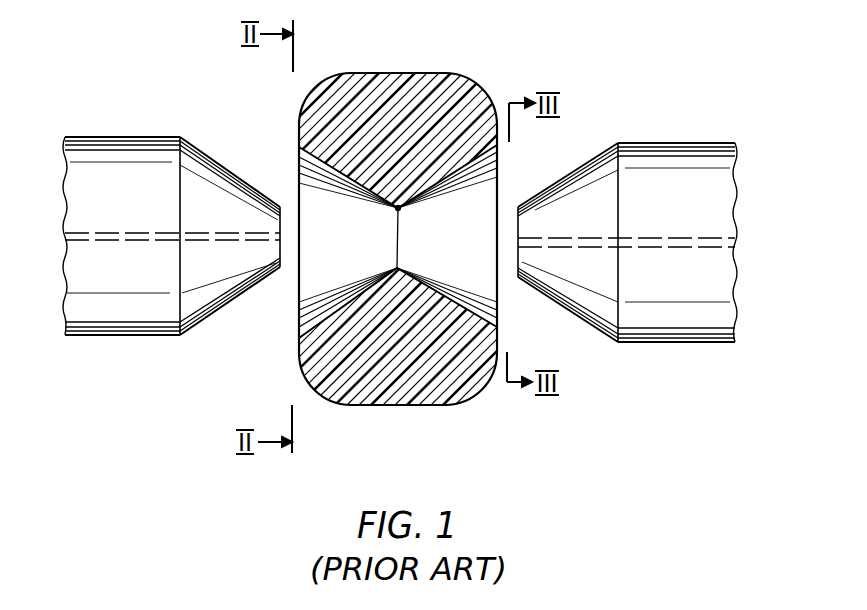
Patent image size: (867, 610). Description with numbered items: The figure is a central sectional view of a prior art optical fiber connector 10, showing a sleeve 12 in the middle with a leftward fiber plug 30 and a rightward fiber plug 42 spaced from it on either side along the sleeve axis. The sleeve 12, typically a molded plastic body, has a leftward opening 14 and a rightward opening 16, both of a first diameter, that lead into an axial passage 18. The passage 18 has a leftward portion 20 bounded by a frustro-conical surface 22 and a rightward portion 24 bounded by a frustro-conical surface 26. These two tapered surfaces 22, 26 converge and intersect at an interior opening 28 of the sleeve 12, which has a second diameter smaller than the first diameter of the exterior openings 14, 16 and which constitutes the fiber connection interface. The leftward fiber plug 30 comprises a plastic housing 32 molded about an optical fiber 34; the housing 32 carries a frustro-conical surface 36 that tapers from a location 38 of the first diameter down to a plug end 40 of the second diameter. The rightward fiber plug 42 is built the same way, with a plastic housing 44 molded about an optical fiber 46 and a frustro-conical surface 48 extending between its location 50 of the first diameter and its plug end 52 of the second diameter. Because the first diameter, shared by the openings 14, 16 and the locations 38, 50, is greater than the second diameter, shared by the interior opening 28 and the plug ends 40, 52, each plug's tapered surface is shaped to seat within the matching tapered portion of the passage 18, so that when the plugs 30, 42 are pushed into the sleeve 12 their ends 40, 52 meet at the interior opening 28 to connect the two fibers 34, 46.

The optical fiber connector 10 is at (642, 64).
The sleeve 12 is at (418, 85).
The leftward opening 14 is at (300, 147).
The rightward opening 16 is at (497, 150).
The axial passage 18 is at (290, 301).
The leftward portion 20 is at (368, 255).
The frustro-conical surface 22 is at (323, 158).
The rightward portion 24 is at (466, 255).
The frustro-conical surface 26 is at (490, 320).
The interior opening 28 is at (401, 209).
The leftward fiber plug 30 is at (128, 124).
The plastic housing 32 is at (118, 322).
The optical fiber 34 is at (187, 244).
The frustro-conical surface 36 is at (212, 140).
The location 38 is at (180, 204).
The plug end 40 is at (278, 213).
The rightward fiber plug 42 is at (678, 128).
The plastic housing 44 is at (700, 330).
The optical fiber 46 is at (540, 243).
The frustro-conical surface 48 is at (583, 147).
The location 50 is at (620, 217).
The plug end 52 is at (520, 271).